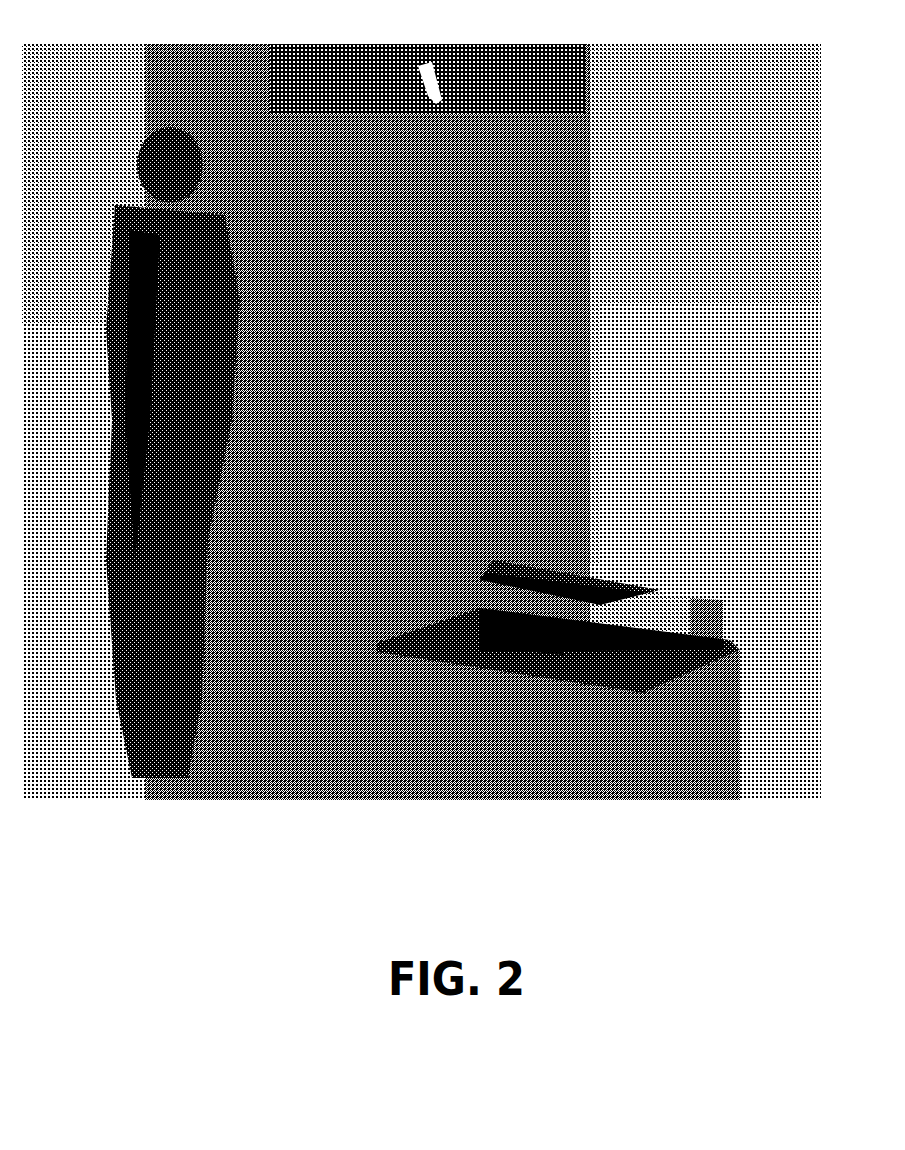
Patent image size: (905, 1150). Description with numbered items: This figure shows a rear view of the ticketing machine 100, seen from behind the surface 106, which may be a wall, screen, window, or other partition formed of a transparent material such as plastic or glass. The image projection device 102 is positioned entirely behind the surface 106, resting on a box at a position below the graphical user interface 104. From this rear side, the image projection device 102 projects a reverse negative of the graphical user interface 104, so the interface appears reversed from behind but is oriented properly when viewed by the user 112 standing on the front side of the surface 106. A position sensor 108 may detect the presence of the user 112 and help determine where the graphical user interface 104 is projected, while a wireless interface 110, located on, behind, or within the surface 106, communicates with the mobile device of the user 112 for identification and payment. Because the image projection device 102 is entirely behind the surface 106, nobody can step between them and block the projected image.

The ticketing machine 100 is at (421, 546).
The image projection device 102 is at (667, 610).
The graphical user interface 104 is at (515, 387).
The surface 106 is at (608, 144).
The position sensor 108 is at (428, 68).
The wireless interface 110 is at (245, 438).
The user 112 is at (143, 138).